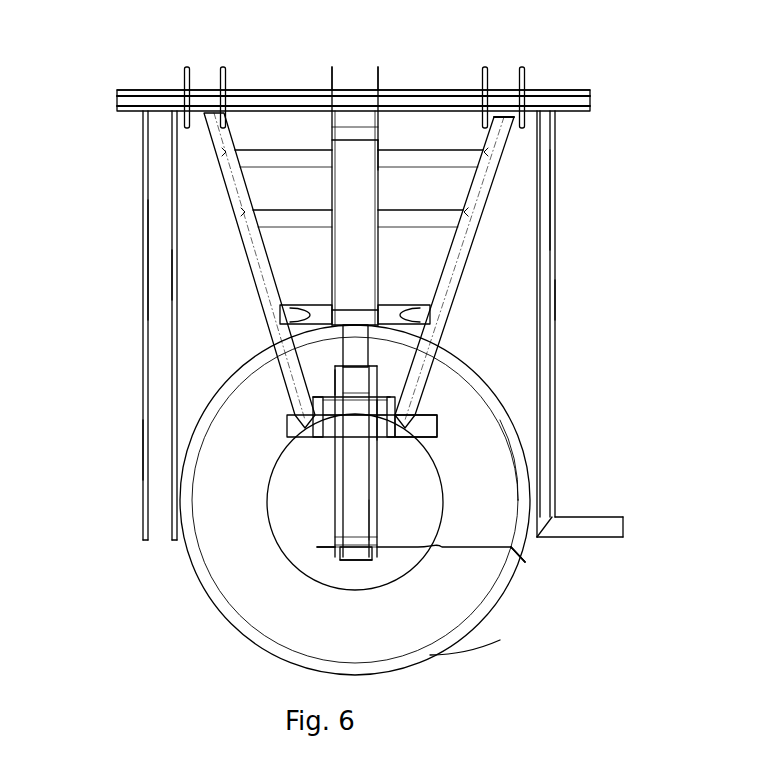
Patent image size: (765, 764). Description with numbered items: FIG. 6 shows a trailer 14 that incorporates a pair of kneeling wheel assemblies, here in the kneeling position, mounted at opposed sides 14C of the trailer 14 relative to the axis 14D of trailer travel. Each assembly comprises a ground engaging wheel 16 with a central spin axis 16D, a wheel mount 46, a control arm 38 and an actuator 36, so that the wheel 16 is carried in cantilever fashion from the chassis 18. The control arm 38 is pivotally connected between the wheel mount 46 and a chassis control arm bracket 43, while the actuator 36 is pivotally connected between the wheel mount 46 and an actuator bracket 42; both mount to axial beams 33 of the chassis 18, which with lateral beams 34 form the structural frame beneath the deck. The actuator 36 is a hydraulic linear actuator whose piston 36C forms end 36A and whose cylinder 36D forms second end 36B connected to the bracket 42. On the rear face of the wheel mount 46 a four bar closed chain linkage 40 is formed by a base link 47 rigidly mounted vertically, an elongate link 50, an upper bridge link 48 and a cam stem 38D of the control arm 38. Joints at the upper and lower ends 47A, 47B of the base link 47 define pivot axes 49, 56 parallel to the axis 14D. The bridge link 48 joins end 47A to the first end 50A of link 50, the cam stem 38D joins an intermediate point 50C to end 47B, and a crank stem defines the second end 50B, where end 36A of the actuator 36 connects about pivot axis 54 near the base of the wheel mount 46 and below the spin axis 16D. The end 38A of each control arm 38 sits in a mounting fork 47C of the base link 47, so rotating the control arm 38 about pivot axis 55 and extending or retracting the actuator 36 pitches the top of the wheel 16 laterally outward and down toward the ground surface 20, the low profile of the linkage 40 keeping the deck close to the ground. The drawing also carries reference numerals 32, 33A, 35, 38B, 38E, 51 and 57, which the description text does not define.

The trailer 14 is at (555, 233).
The opposed sides 14C is at (469, 634).
The axis of trailer travel 14D is at (397, 278).
The ground engaging wheel 16 is at (208, 585).
The central spin axis 16D is at (356, 482).
The chassis 18 is at (262, 97).
The ground surface 20 is at (108, 352).
The direction of rotation 32 is at (204, 357).
The axial beams 33 is at (128, 97).
The plate opening 33A is at (452, 97).
The lateral beams 34 is at (555, 190).
The direction arrow 35 is at (490, 301).
The actuator 36 is at (370, 260).
The end of actuator 36A is at (373, 368).
The second end of actuator 36B is at (354, 128).
The piston 36C is at (357, 342).
The cylinder 36D is at (378, 163).
The control arm 38 is at (225, 198).
The end of control arm 38A is at (417, 427).
The strut upper end 38B is at (513, 119).
The cam stem 38D is at (287, 415).
The strut notch 38E is at (427, 220).
The closed chain linkage 40 is at (319, 479).
The actuator bracket 42 is at (383, 78).
The chassis control arm bracket 43 is at (224, 78).
The wheel mount 46 is at (518, 549).
The base link 47 is at (353, 540).
The upper end of base link 47A is at (405, 550).
The lower end of base link 47B is at (420, 428).
The mounting fork 47C is at (591, 498).
The upper bridge link 48 is at (334, 562).
The pivot axis 49 is at (332, 546).
The elongate link 50 is at (336, 464).
The first end of elongate link 50A is at (317, 547).
The second end of elongate link 50B is at (297, 353).
The intermediate point 50C is at (378, 403).
The tube bore 51 is at (377, 536).
The pivot axis 54 is at (395, 360).
The pivot axis 55 is at (287, 434).
The pivot axis 56 is at (357, 393).
The column cap 57 is at (332, 127).